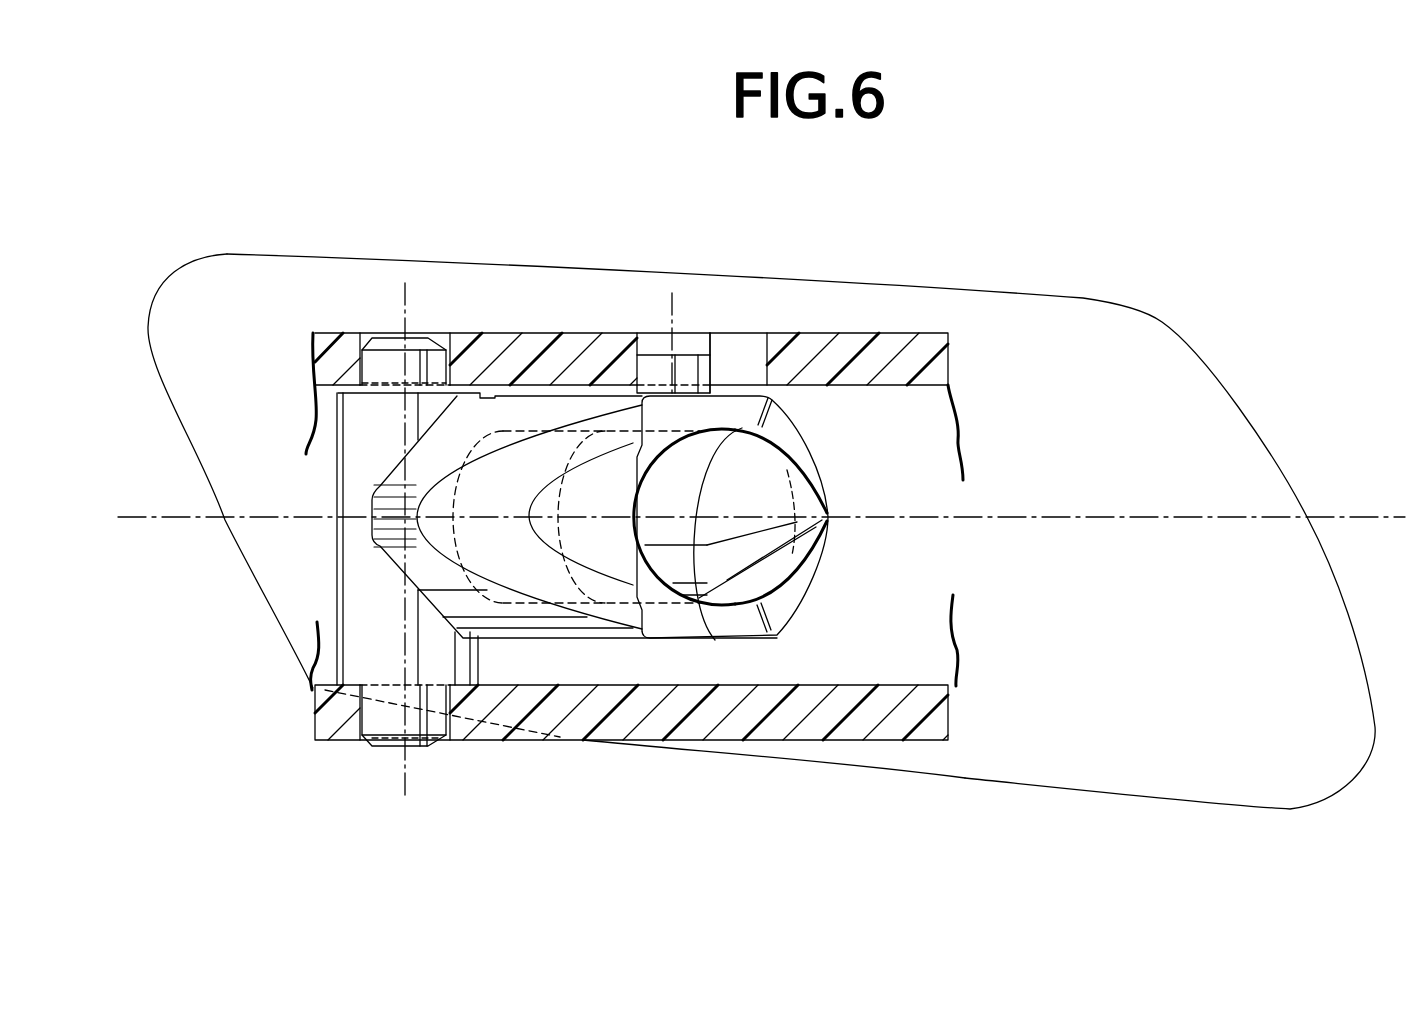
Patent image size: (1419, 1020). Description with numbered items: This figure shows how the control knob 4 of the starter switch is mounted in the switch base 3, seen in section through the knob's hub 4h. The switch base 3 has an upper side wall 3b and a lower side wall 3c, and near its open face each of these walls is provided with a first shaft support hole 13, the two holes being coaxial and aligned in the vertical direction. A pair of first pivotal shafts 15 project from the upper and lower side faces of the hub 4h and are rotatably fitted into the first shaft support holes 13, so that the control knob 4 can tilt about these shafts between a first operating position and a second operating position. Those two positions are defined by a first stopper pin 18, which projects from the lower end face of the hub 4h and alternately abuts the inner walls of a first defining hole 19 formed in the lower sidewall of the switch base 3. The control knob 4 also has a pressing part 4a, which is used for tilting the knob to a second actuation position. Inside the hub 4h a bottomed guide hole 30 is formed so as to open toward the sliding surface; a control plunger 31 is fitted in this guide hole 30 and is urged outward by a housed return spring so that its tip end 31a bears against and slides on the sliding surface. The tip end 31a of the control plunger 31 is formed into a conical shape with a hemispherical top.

The switch base 3 is at (551, 338).
The upper side wall 3b is at (712, 723).
The lower side wall 3c is at (848, 347).
The control knob 4 is at (1163, 326).
The pressing part 4a is at (1118, 752).
The hub 4h is at (352, 573).
The first shaft support hole 13 is at (370, 362).
The first pivotal shaft 15 is at (417, 360).
The first stopper pin 18 is at (656, 360).
The first defining hole 19 is at (750, 352).
The bottomed guide hole 30 is at (567, 600).
The control plunger 31 is at (692, 577).
The tip end 31a is at (772, 477).